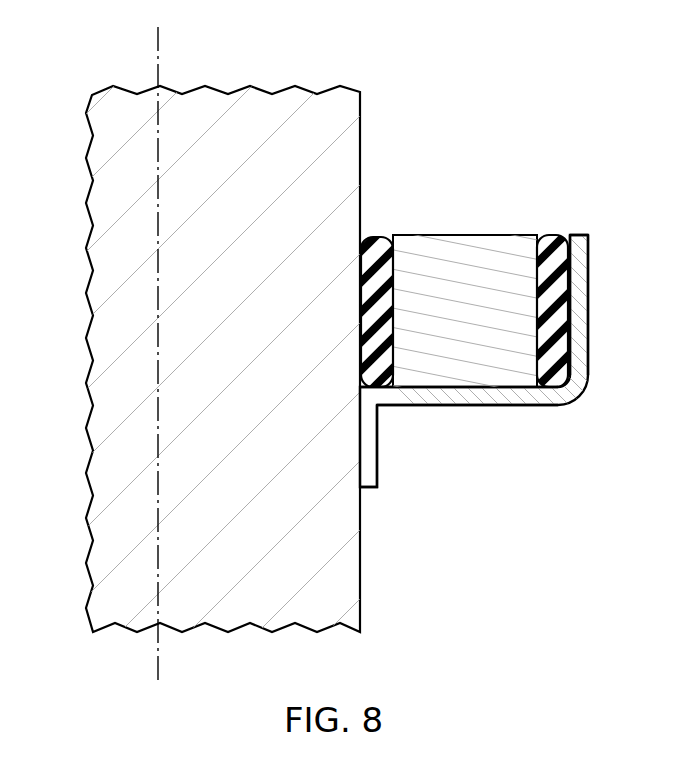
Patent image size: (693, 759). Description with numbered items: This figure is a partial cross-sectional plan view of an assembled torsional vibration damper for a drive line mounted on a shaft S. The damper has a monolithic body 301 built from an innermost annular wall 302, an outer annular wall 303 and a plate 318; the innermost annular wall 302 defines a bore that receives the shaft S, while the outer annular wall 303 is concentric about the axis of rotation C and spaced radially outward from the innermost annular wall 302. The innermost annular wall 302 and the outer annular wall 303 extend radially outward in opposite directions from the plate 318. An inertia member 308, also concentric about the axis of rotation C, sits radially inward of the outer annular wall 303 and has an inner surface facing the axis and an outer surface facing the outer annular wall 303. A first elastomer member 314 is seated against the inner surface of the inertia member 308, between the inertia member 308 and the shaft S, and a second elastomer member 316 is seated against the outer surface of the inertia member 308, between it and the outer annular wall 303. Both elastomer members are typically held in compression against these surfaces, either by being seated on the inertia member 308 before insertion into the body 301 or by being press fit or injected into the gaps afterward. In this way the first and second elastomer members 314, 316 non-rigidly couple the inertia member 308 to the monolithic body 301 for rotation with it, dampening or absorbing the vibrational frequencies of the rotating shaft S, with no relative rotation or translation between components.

The shaft S is at (100, 290).
The axis of rotation C is at (158, 46).
The monolithic body 301 is at (583, 322).
The innermost annular wall 302 is at (372, 445).
The outer annular wall 303 is at (583, 273).
The inertia member 308 is at (470, 240).
The first elastomer member 314 is at (378, 237).
The second elastomer member 316 is at (558, 238).
The plate 318 is at (502, 390).